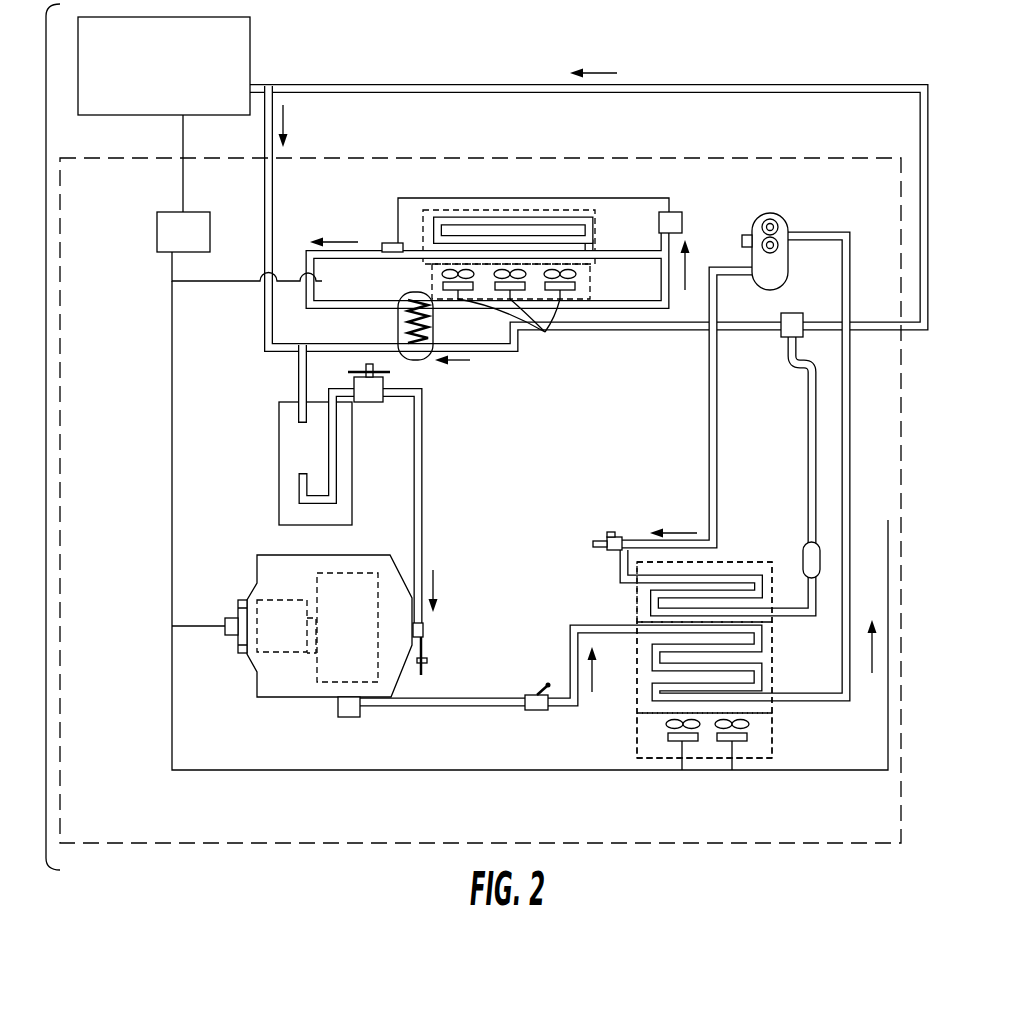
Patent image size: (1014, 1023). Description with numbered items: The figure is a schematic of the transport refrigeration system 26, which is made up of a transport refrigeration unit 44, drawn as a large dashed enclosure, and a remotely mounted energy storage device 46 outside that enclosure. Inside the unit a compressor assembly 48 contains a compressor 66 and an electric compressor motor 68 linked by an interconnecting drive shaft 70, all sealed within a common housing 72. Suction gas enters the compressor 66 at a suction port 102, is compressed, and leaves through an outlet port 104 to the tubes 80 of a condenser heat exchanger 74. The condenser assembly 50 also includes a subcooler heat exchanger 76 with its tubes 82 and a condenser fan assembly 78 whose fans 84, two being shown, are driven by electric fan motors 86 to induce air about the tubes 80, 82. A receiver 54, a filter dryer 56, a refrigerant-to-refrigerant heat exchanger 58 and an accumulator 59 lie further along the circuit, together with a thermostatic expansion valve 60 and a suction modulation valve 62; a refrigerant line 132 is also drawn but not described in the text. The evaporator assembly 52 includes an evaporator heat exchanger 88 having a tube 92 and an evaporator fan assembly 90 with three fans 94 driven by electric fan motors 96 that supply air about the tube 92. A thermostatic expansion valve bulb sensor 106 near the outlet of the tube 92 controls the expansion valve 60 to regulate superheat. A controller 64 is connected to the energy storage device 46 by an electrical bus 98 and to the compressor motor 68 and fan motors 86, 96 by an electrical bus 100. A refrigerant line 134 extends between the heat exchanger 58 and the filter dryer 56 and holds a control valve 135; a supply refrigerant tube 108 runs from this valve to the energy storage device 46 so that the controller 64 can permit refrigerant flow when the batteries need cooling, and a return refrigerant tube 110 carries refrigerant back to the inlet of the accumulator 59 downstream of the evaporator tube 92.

The transport refrigeration system 26 is at (46, 362).
The transport refrigeration unit 44 is at (793, 152).
The energy storage device 46 is at (175, 78).
The compressor assembly 48 is at (281, 722).
The condenser assembly 50 is at (702, 784).
The evaporator assembly 52 is at (586, 186).
The receiver 54 is at (788, 251).
The filter dryer 56 is at (822, 550).
The refrigerant-to-refrigerant heat exchanger 58 is at (397, 331).
The accumulator 59 is at (279, 460).
The thermostatic expansion valve 60 is at (682, 221).
The suction modulation valve 62 is at (393, 493).
The controller 64 is at (195, 246).
The compressor 66 is at (361, 640).
The electric compressor motor 68 is at (290, 640).
The interconnecting drive shaft 70 is at (310, 655).
The common housing 72 is at (257, 668).
The condenser heat exchanger 74 is at (772, 635).
The subcooler heat exchanger 76 is at (635, 612).
The condenser fan assembly 78 is at (772, 752).
The tubes of condenser heat exchanger 80 is at (760, 673).
The tubes of subcooler heat exchanger 82 is at (737, 575).
The fan 84 is at (665, 727).
The electric fan motor 86 is at (672, 742).
The evaporator heat exchanger 88 is at (598, 240).
The evaporator fan assembly 90 is at (592, 280).
The evaporator tube 92 is at (433, 226).
The fan 94 is at (564, 272).
The electric fan motor 96 is at (509, 334).
The electrical pathway or bus 98 is at (184, 191).
The electrical pathway or bus 100 is at (219, 282).
The suction port 102 is at (425, 630).
The outlet port 104 is at (350, 717).
The thermostatic expansion valve bulb sensor 106 is at (392, 242).
The supply refrigerant tube 108 is at (522, 93).
The return refrigerant tube 110 is at (274, 190).
The refrigerant line 132 is at (810, 232).
The refrigerant line 134 is at (617, 331).
The control valve 135 is at (782, 338).